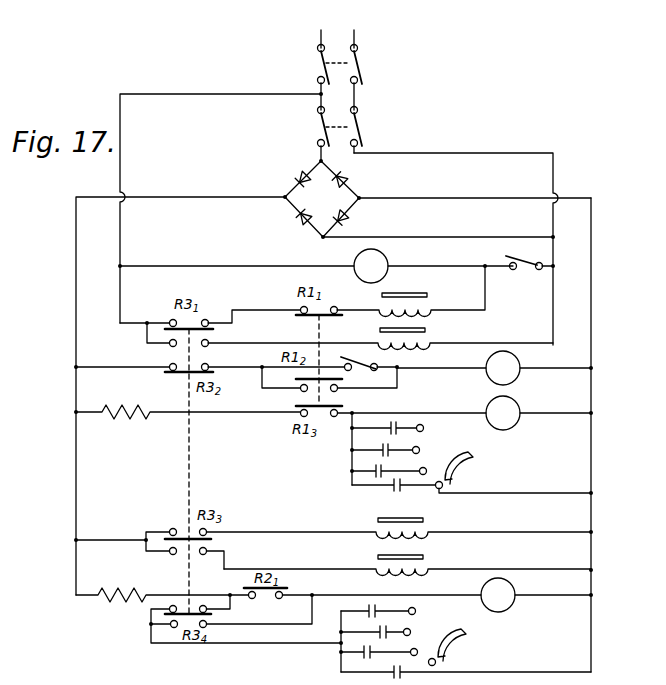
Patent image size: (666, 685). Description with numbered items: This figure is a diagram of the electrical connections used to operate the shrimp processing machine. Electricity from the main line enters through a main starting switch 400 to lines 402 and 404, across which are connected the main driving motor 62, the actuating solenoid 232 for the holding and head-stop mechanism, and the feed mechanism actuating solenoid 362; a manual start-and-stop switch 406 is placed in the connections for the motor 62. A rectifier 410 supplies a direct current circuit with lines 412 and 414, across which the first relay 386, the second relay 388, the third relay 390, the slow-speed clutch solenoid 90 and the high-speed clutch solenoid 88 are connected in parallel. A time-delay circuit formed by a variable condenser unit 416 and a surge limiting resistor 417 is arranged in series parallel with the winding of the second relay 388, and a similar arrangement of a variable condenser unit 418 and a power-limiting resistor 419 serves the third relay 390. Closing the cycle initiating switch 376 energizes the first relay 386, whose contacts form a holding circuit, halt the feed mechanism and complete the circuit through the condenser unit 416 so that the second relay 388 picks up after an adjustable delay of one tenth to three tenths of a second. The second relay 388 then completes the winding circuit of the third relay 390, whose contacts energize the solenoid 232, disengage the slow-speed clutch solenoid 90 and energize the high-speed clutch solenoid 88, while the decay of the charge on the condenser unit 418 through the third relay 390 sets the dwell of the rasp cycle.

The main starting switch 400 is at (362, 74).
The line 402 is at (124, 172).
The line 404 is at (558, 180).
The rectifier 410 is at (310, 226).
The main driving motor 62 is at (397, 251).
The manual start-and-stop switch 406 is at (527, 270).
The feed mechanism actuating solenoid 362 is at (428, 297).
The actuating solenoid 232 is at (428, 332).
The cycle initiating switch 376 is at (365, 372).
The first relay 386 is at (516, 380).
The second relay 388 is at (516, 425).
The third relay 390 is at (511, 607).
The line 412 is at (593, 442).
The line 414 is at (75, 448).
The variable condenser unit 416 is at (347, 463).
The variable condenser unit 418 is at (334, 666).
The surge limiting resistor 417 is at (148, 386).
The power-limiting resistor 419 is at (148, 573).
The slow-speed clutch solenoid 90 is at (428, 521).
The high-speed clutch solenoid 88 is at (428, 558).